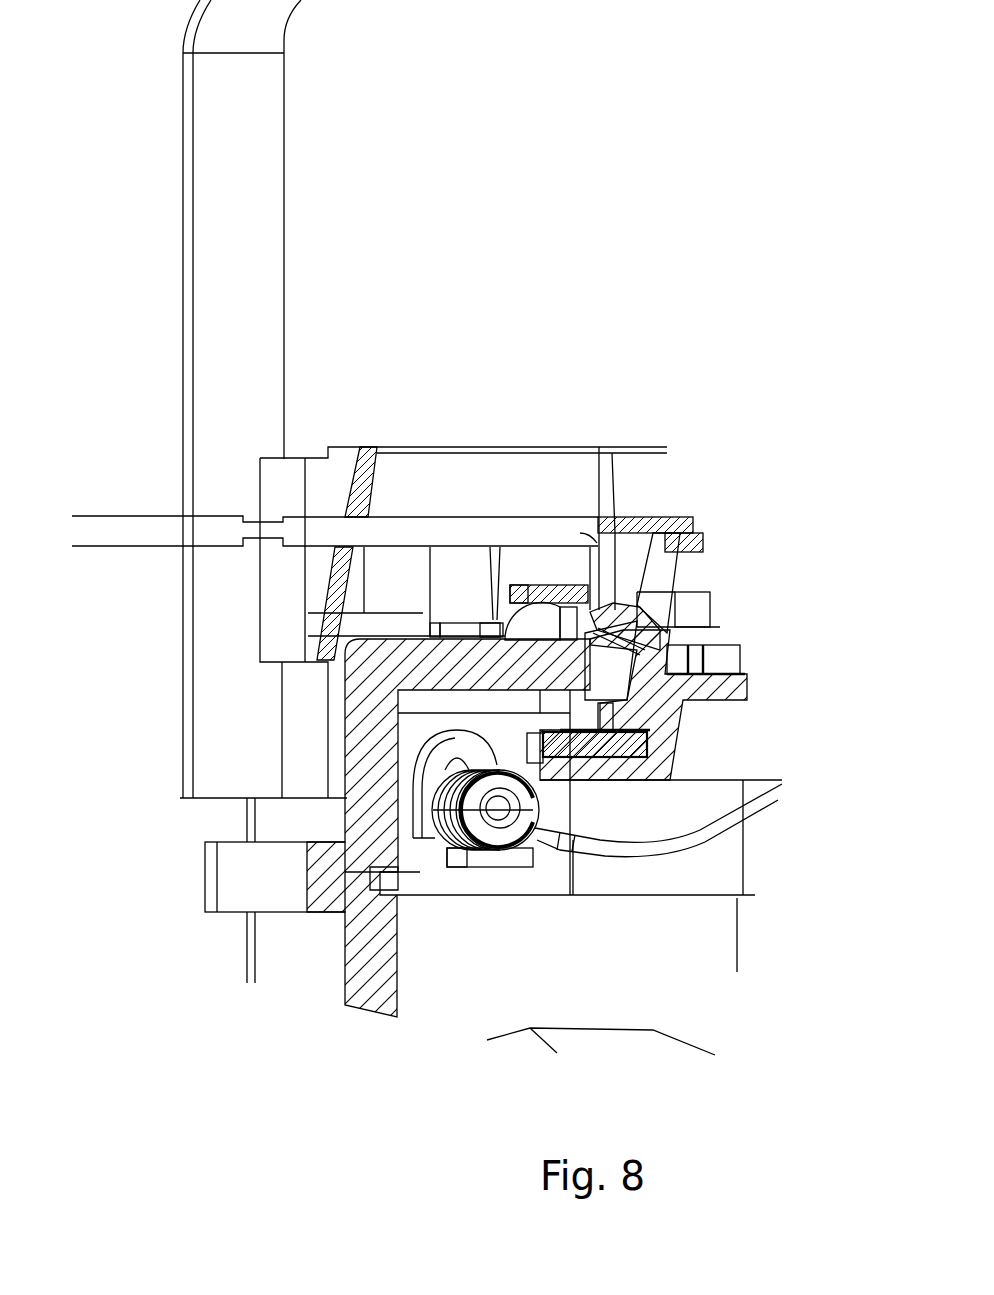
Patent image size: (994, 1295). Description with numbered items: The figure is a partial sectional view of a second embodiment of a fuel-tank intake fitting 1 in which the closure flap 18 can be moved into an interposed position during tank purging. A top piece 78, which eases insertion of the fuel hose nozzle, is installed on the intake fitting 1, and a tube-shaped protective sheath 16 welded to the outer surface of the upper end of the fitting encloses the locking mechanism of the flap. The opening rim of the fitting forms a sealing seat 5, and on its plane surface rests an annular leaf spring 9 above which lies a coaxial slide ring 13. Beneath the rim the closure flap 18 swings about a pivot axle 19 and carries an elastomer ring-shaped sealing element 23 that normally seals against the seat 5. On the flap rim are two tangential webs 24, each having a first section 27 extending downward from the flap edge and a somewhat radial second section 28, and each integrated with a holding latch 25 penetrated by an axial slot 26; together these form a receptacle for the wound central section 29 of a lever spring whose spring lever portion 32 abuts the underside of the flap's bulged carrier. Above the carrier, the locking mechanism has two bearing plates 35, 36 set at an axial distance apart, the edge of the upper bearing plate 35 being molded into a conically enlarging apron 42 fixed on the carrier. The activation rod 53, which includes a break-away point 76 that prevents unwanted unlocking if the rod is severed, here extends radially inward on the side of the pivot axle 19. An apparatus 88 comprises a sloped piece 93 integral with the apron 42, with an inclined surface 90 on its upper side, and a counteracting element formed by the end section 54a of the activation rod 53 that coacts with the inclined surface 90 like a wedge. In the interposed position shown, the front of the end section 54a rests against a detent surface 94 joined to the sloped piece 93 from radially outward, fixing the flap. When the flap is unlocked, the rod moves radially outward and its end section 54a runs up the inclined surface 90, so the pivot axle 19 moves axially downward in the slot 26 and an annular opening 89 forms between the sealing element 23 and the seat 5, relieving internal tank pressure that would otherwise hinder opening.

The intake fitting 1 is at (246, 962).
The sealing element seat 5 is at (548, 718).
The annular spring 9 is at (560, 612).
The slide ring 13 is at (545, 600).
The protective sheath 16 is at (333, 573).
The closure flap 18 is at (660, 765).
The pivot axle 19 is at (540, 830).
The sealing element 23 is at (650, 781).
The webs 24 is at (483, 876).
The holding latch 25 is at (443, 743).
The slot 26 is at (452, 765).
The first section 27 is at (535, 812).
The second section 28 is at (520, 868).
The wound central section 29 is at (437, 853).
The spring lever portion 32 is at (676, 852).
The upper bearing plate 35 is at (662, 518).
The bearing plate 36 is at (697, 633).
The apron 42 is at (668, 668).
The activation rod 53 is at (130, 522).
The end section of activation rod 54a is at (648, 565).
The break-away point 76 is at (265, 530).
The top piece 78 is at (218, 250).
The apparatus 88 is at (623, 580).
The annular opening 89 is at (620, 640).
The inclined surface 90 is at (627, 613).
The sloped piece 93 is at (738, 656).
The detent surface 94 is at (602, 540).